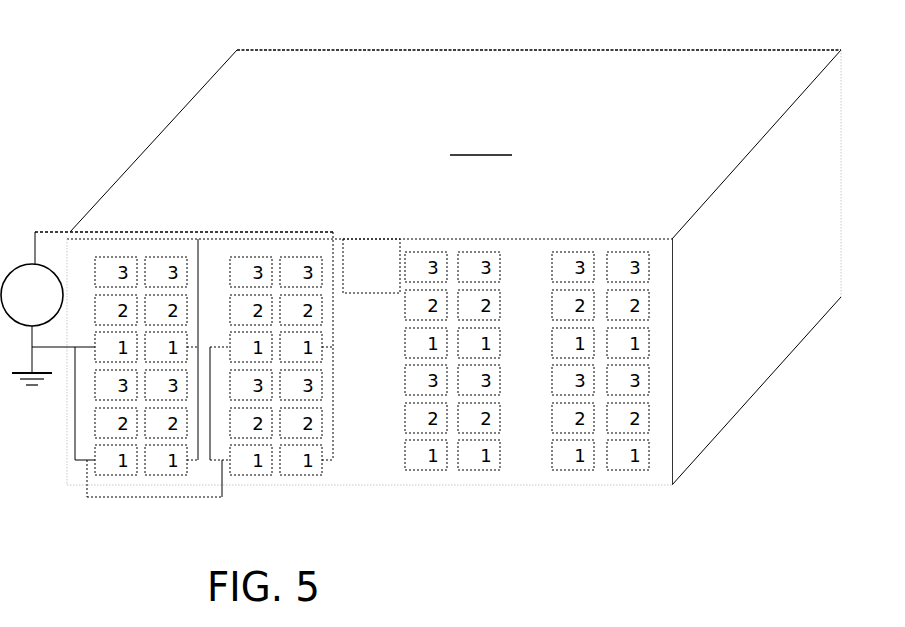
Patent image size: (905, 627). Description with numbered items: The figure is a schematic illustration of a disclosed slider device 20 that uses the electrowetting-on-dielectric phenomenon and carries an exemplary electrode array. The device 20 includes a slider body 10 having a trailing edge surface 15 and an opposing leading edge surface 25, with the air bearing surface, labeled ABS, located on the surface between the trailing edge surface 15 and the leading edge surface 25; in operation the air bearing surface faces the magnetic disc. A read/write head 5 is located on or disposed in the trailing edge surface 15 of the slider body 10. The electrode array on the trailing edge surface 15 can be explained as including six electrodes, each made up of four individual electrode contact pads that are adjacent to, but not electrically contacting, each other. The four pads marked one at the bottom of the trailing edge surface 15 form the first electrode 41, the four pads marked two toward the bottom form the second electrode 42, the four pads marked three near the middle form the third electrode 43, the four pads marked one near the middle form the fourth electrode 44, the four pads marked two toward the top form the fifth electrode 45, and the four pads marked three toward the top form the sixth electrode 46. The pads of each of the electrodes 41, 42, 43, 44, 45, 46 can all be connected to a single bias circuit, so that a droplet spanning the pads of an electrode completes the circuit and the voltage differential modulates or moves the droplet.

The read/write head 5 is at (374, 275).
The slider body 10 is at (836, 170).
The trailing edge surface 15 is at (562, 417).
The device 20 is at (600, 73).
The leading edge surface 25 is at (311, 51).
The first electrode 41 is at (514, 461).
The second electrode 42 is at (673, 401).
The third electrode 43 is at (673, 363).
The fourth electrode 44 is at (673, 324).
The fifth electrode 45 is at (673, 285).
The sixth electrode 46 is at (673, 247).